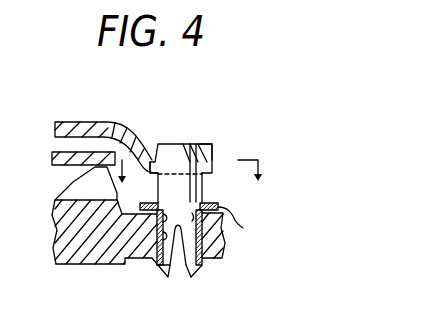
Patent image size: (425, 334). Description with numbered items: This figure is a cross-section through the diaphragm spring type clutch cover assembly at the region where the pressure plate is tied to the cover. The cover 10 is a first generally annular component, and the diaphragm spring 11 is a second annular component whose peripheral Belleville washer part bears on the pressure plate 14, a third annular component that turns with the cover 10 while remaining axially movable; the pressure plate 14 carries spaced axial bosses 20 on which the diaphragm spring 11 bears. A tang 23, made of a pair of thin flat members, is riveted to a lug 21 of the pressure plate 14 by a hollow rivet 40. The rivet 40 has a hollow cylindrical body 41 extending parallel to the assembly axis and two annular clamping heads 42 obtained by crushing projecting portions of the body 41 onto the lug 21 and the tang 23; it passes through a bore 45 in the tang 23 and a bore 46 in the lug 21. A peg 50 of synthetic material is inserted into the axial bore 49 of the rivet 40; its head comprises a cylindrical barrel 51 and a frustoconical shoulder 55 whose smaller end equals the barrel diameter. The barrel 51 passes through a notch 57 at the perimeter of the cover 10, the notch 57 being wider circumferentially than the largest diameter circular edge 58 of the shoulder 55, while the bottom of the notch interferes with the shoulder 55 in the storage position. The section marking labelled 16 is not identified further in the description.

The cover 10 is at (52, 128).
The diaphragm spring 11 is at (48, 157).
The pressure plate 14 is at (52, 226).
The section line V-V 16 is at (226, 156).
The axial bosses 20 is at (92, 183).
The lug 21 is at (218, 246).
The tang 23 is at (240, 224).
The hollow rivet 40 is at (143, 269).
The hollow cylindrical body 41 is at (186, 178).
The annular clamping heads 42 is at (205, 204).
The bore in the tangs 45 is at (156, 221).
The bore in the lug 46 is at (156, 243).
The axial bore 49 is at (171, 267).
The peg 50 is at (168, 140).
The cylindrical barrel 51 is at (188, 163).
The shoulder 55 is at (216, 162).
The notch 57 is at (153, 160).
The largest diameter circular edge 58 is at (213, 156).